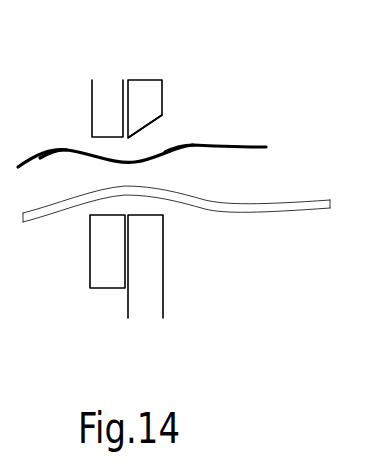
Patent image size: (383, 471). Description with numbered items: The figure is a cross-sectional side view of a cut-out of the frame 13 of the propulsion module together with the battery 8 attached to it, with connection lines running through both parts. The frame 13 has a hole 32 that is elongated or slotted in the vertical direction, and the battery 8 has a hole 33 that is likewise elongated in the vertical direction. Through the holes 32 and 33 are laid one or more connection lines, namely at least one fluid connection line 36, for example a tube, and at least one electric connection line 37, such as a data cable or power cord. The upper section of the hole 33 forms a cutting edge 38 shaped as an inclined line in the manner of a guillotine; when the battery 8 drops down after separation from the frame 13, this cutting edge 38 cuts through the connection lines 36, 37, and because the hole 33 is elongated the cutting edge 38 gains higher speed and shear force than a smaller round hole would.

The battery 8 is at (145, 82).
The frame 13 is at (107, 80).
The hole 32 is at (98, 178).
The hole 33 is at (153, 177).
The fluid connection line 36 is at (230, 211).
The electric connection line 37 is at (236, 145).
The cutting edge 38 is at (147, 135).